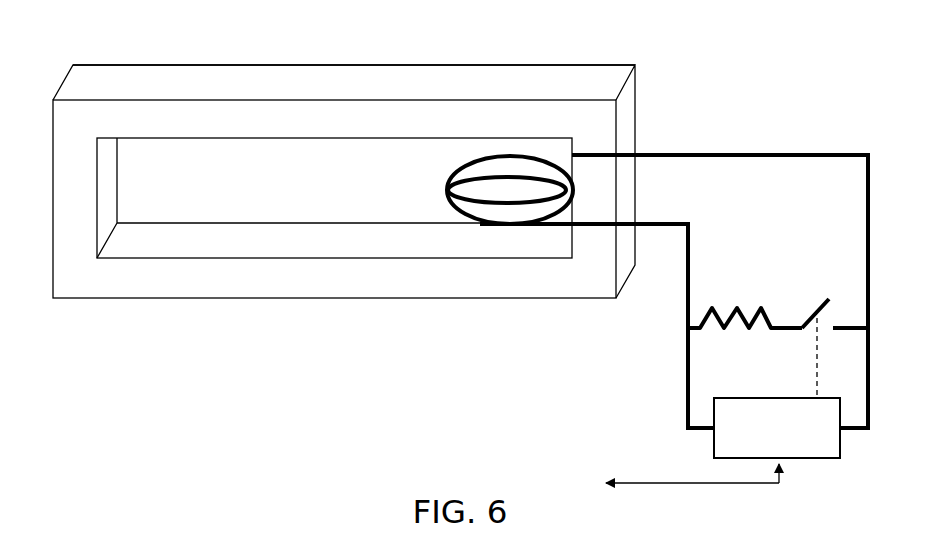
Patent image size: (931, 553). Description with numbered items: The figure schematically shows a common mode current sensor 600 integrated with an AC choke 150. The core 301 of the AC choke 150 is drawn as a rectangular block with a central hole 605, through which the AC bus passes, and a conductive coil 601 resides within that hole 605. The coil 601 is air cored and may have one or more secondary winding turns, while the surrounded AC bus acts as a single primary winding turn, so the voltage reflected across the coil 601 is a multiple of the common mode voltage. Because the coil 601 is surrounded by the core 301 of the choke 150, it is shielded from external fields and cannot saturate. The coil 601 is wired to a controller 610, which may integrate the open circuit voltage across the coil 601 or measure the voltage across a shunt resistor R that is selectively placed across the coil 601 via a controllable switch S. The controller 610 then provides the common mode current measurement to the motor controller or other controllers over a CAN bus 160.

The AC choke 150 is at (344, 196).
The core 301 is at (303, 65).
The central hole 605 is at (320, 180).
The common mode current sensor 600 is at (614, 258).
The conductive coil 601 is at (445, 202).
The controller 610 is at (777, 428).
The CAN bus 160 is at (700, 482).